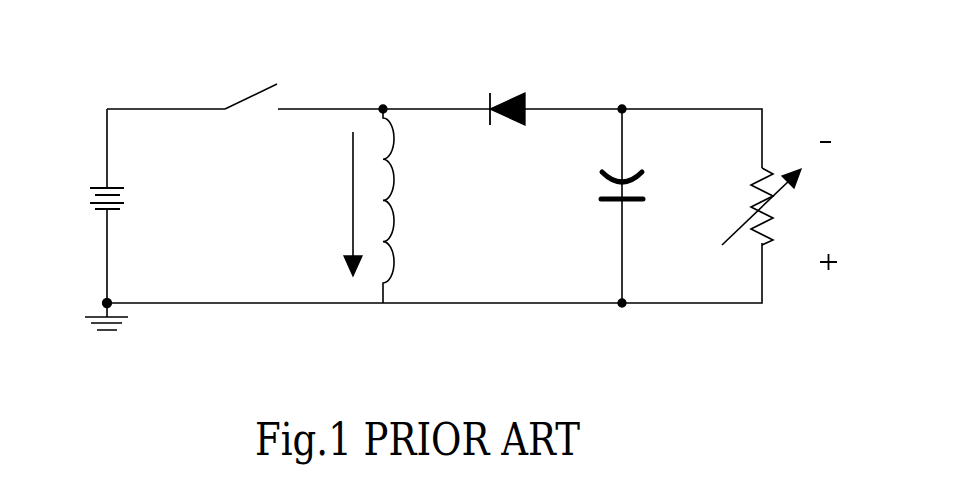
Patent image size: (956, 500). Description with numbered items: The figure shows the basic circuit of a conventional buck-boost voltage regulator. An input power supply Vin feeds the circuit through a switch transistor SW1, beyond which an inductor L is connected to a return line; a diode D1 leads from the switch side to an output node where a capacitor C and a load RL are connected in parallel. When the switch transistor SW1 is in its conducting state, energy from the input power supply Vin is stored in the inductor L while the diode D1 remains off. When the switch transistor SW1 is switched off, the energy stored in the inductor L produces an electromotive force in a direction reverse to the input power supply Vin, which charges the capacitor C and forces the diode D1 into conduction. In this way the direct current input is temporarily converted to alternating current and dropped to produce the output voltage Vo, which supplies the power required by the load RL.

The switch transistor SW1 is at (270, 72).
The input power supply Vin is at (85, 203).
The inductor L is at (387, 206).
The diode D1 is at (513, 130).
The capacitor C is at (600, 206).
The load RL is at (743, 206).
The output voltage Vo is at (825, 203).